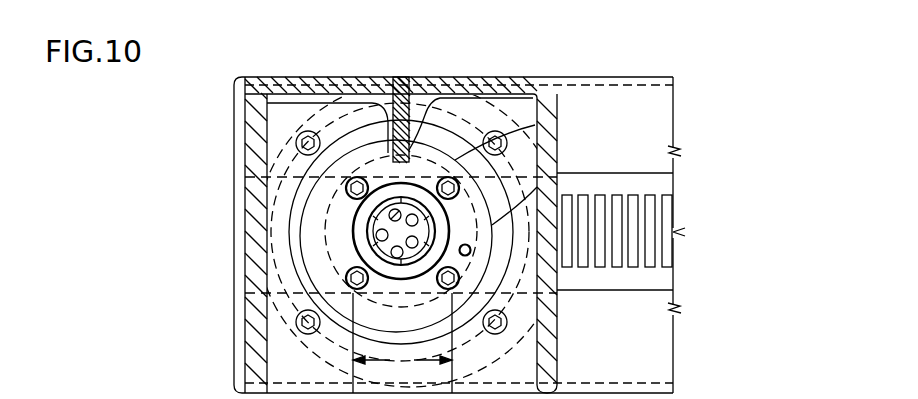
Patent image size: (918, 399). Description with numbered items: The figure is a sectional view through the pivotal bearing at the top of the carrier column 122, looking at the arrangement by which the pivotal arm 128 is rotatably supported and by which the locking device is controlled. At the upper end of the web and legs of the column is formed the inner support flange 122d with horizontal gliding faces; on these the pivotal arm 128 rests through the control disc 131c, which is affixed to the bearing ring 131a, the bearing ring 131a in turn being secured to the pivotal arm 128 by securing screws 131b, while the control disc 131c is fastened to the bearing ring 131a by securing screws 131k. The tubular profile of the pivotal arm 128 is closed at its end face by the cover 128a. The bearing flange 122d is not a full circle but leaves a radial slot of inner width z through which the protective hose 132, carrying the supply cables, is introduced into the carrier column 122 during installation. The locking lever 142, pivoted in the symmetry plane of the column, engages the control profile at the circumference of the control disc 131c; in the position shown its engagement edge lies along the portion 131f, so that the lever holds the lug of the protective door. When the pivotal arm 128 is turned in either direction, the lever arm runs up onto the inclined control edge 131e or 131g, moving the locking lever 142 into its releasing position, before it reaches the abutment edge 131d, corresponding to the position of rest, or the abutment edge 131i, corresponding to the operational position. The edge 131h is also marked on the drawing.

The carrier column 122 is at (293, 76).
The inner support flange 122d is at (522, 347).
The pivotal arm 128 is at (665, 132).
The cover 128a is at (243, 152).
The bearing ring 131a is at (440, 151).
The securing screws 131b is at (470, 155).
The control disc 131c is at (330, 262).
The abutment edge 131d is at (267, 106).
The control edge 131e is at (392, 120).
The portion 131f is at (498, 100).
The control edge 131g is at (547, 160).
The partition 131h is at (557, 182).
The abutment edge 131i is at (473, 292).
The securing screws 131k is at (330, 200).
The protective hose 132 is at (645, 238).
The locking lever 142 is at (410, 128).